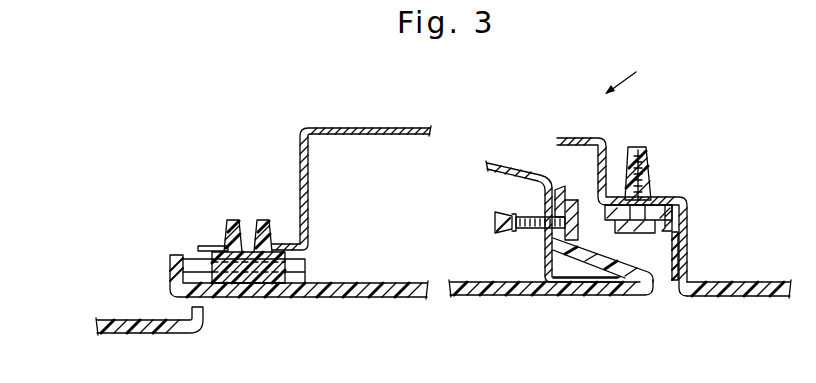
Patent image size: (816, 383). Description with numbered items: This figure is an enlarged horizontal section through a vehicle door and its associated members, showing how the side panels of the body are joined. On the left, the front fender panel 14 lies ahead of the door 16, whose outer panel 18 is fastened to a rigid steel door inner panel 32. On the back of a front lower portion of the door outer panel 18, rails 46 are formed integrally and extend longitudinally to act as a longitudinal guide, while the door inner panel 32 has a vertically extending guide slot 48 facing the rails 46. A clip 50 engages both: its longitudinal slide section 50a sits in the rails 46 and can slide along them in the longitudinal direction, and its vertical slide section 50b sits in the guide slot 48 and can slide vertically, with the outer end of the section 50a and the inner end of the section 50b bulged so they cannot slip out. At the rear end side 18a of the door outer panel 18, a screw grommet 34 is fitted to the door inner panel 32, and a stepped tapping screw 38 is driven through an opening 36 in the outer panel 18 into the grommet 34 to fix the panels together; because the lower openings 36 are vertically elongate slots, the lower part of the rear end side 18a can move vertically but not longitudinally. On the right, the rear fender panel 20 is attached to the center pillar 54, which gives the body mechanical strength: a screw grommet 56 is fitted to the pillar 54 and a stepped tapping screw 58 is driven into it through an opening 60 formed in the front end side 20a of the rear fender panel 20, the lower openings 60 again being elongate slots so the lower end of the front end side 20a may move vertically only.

The front fender panel 14 is at (158, 335).
The door 16 is at (636, 74).
The door outer panel 18 is at (387, 299).
The rear end side of the door outer panel 18a is at (606, 253).
The rear fender panel 20 is at (734, 297).
The front end side of the rear fender panel 20a is at (675, 292).
The door inner panel 32 is at (366, 126).
The screw grommet 34 is at (496, 217).
The opening 36 is at (577, 203).
The stepped tapping screw 38 is at (532, 231).
The rails 46 is at (306, 265).
The guide slot 48 is at (264, 232).
The clip 50 is at (232, 220).
The longitudinal slide section 50a is at (243, 284).
The vertical slide section 50b is at (222, 247).
The center pillar 54 is at (689, 212).
The screw grommet 56 is at (641, 147).
The stepped tapping screw 58 is at (627, 166).
The opening 60 is at (646, 204).